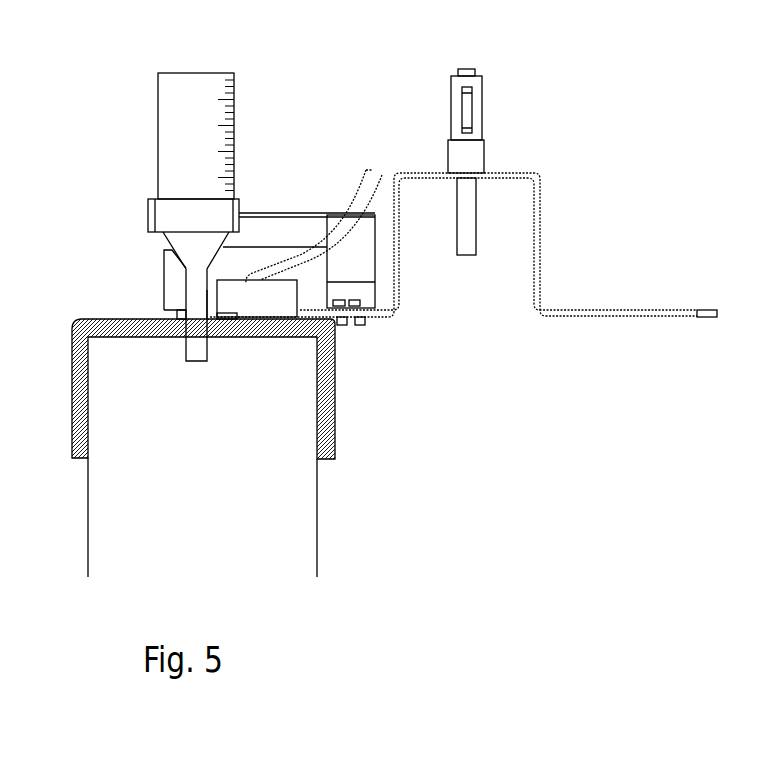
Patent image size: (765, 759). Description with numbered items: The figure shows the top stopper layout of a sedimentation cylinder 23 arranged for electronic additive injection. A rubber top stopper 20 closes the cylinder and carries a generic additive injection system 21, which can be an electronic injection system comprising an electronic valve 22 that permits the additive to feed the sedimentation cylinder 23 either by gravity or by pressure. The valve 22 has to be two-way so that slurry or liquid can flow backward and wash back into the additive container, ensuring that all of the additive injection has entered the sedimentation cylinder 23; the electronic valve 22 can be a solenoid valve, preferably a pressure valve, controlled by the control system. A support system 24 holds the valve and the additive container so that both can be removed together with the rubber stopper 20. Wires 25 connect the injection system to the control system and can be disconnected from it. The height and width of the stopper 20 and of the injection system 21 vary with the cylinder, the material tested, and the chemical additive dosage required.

The top stopper 20 is at (98, 318).
The additive injection system 21 is at (188, 82).
The electronic valve 22 is at (175, 300).
The sedimentation cylinder 23 is at (272, 468).
The support system 24 is at (265, 315).
The wires 25 is at (352, 203).